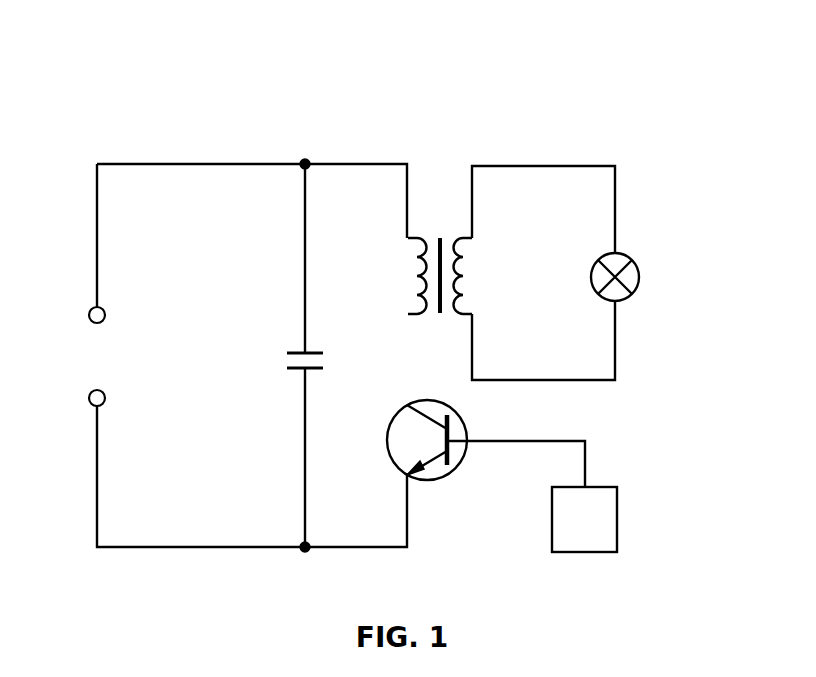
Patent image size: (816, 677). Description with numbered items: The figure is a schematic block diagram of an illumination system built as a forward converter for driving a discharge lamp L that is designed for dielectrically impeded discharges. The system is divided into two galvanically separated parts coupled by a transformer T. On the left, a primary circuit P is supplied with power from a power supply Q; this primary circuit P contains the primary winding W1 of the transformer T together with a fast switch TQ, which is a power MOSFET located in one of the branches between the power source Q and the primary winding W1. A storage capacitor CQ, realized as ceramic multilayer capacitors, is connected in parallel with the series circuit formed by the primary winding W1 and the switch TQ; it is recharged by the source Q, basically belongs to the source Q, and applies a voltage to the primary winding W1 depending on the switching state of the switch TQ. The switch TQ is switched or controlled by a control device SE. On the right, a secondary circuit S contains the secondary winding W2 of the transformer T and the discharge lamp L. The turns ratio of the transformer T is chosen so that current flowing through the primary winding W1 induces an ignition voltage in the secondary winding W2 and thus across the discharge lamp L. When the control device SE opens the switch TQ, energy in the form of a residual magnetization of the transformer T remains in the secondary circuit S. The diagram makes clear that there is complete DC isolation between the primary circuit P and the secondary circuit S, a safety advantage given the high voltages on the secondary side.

The primary circuit P is at (189, 135).
The secondary circuit S is at (531, 135).
The transformer T is at (428, 173).
The primary winding W1 is at (387, 276).
The secondary winding W2 is at (495, 276).
The discharge lamp L is at (632, 277).
The power supply Q is at (81, 356).
The storage capacitor CQ is at (275, 355).
The fast switch TQ is at (435, 461).
The control device SE is at (533, 496).